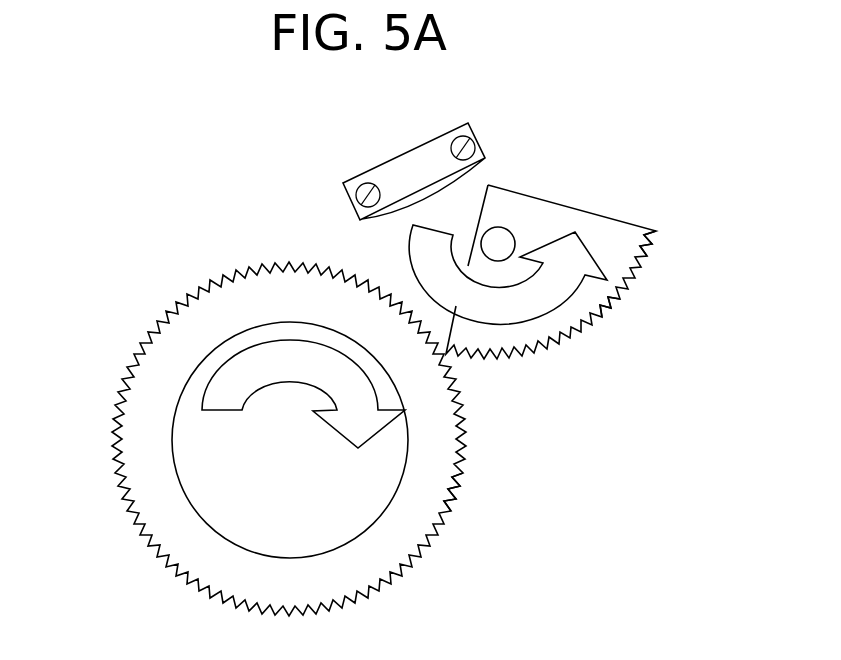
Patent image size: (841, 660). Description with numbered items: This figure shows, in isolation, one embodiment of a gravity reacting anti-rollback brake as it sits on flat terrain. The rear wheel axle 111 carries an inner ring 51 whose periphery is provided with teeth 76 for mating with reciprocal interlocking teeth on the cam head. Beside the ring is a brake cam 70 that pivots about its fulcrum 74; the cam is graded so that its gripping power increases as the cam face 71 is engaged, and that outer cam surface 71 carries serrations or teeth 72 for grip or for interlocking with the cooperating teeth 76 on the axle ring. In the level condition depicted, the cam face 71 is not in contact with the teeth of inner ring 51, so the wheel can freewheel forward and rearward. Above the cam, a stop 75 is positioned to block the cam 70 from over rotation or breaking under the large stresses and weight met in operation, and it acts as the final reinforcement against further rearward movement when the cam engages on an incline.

The inner ring 51 is at (165, 321).
The wheel axle 111 is at (190, 398).
The brake cam 70 is at (592, 212).
The cam face 71 is at (613, 300).
The teeth 72 is at (668, 264).
The fulcrum 74 is at (502, 240).
The stop 75 is at (400, 155).
The teeth 76 is at (452, 510).